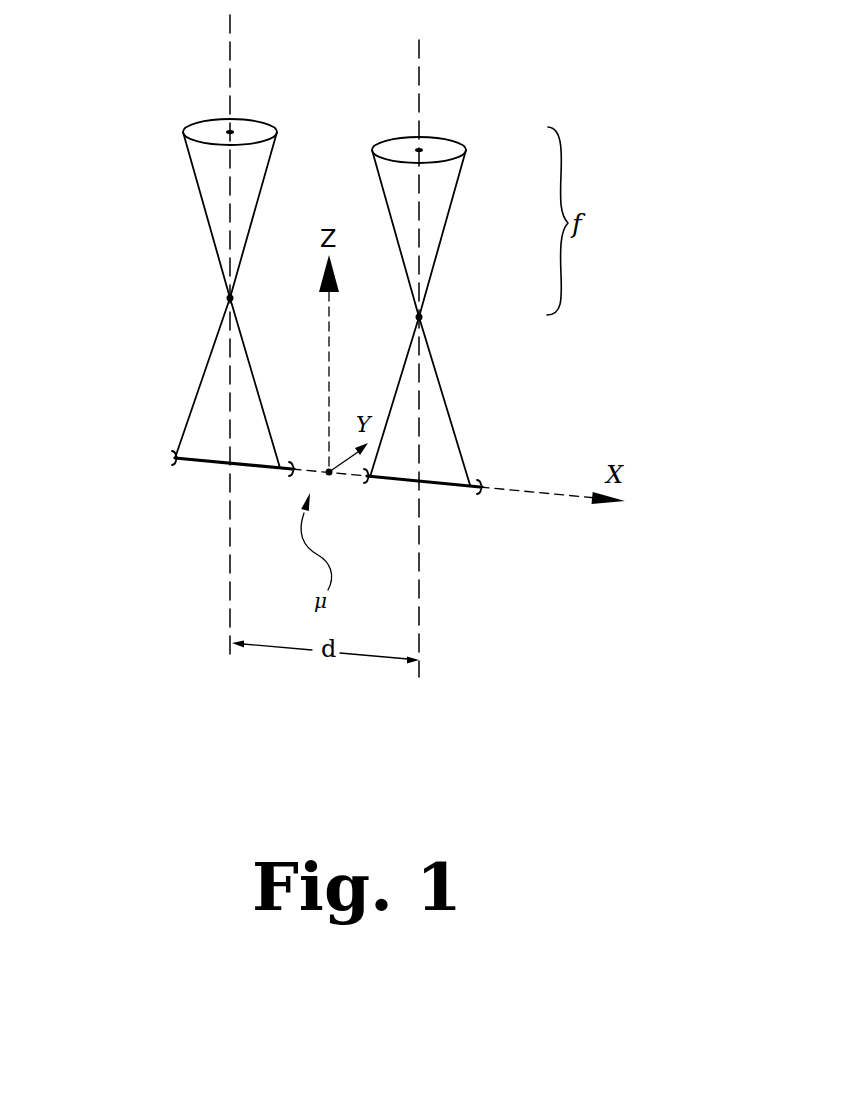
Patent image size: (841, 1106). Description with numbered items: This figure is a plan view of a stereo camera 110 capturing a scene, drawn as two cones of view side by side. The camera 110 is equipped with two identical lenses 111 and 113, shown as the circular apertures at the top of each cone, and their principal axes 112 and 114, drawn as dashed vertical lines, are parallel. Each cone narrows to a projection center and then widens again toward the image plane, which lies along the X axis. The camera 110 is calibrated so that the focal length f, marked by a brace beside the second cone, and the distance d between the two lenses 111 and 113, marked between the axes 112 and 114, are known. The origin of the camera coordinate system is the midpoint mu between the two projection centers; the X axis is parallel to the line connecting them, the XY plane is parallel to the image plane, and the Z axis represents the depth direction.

The stereo camera 110 is at (130, 112).
The lens 111 is at (192, 120).
The principal axis 112 is at (230, 590).
The lens 113 is at (454, 139).
The principal axis 114 is at (420, 607).